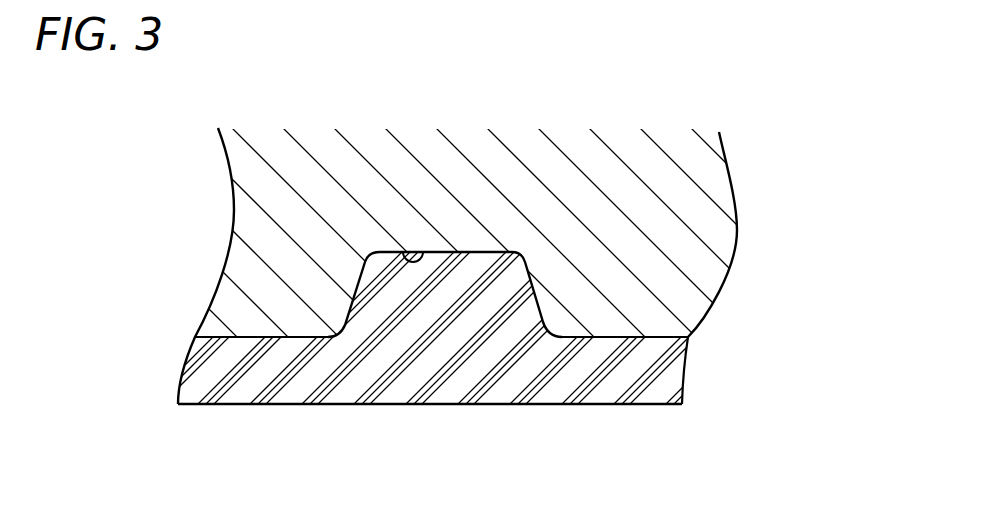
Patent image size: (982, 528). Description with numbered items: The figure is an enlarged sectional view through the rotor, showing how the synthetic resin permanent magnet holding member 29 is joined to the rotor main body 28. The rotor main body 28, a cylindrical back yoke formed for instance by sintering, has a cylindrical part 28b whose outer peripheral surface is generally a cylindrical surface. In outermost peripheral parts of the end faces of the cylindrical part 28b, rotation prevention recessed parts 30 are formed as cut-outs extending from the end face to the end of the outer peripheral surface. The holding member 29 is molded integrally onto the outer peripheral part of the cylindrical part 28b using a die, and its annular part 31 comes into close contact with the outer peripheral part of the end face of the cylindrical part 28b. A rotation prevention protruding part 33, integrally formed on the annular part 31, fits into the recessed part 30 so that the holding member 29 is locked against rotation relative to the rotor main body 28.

The rotor main body 28 is at (250, 210).
The cylindrical part 28b is at (697, 257).
The permanent magnet holding member 29 is at (592, 390).
The rotation prevention recessed part 30 is at (405, 262).
The annular part 31 is at (205, 378).
The rotation prevention protruding part 33 is at (483, 262).